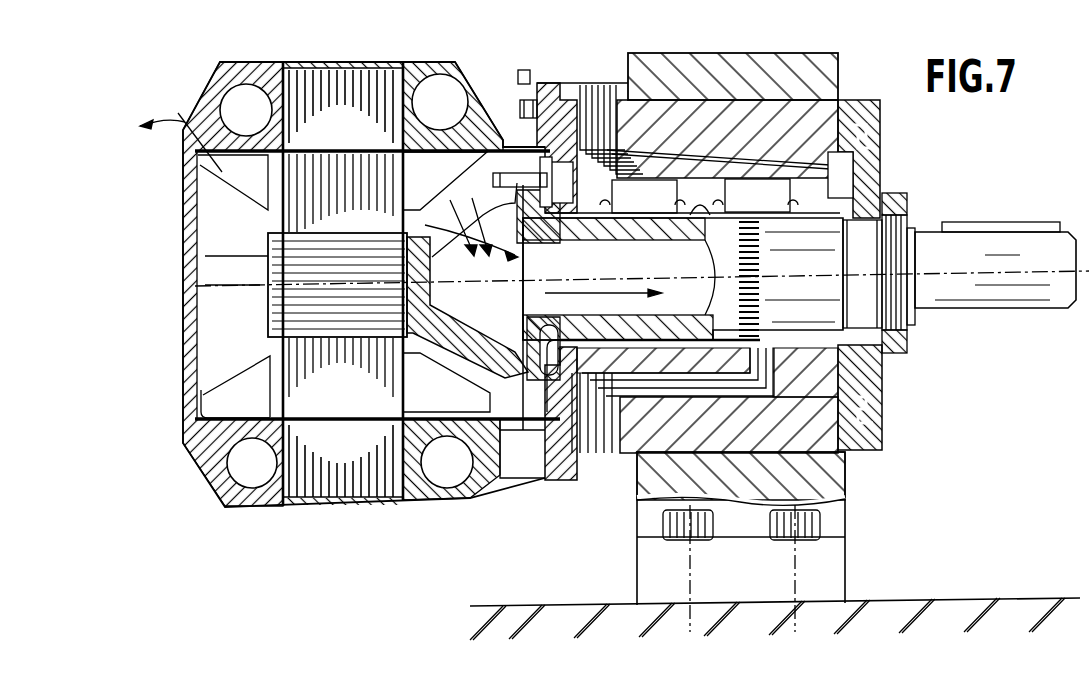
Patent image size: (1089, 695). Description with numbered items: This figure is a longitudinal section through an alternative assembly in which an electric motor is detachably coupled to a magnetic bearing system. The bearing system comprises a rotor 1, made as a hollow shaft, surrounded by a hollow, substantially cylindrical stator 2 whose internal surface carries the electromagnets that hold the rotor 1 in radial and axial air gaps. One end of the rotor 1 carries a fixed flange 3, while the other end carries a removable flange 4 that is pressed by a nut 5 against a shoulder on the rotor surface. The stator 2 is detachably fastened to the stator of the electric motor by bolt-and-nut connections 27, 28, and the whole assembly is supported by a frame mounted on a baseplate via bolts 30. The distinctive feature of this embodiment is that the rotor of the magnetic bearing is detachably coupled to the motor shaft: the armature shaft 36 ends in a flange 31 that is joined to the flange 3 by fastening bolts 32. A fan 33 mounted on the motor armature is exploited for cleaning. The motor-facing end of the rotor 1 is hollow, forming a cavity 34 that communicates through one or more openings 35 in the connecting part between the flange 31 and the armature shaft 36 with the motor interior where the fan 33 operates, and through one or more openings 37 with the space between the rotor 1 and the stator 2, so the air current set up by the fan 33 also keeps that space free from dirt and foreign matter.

The rotor 1 is at (655, 258).
The stator 2 is at (745, 100).
The flange 3 is at (538, 447).
The removable flange 4 is at (872, 165).
The nut 5 is at (905, 207).
The bolt-and-nut connection 27 is at (524, 68).
The bolt-and-nut connection 28 is at (528, 96).
The bolts 30 is at (705, 537).
The flange 31 is at (510, 385).
The fastening bolts 32 is at (505, 147).
The fan 33 is at (227, 404).
The cavity 34 is at (522, 312).
The openings 35 is at (462, 233).
The rotor armature shaft 36 is at (278, 285).
The openings 37 is at (697, 207).